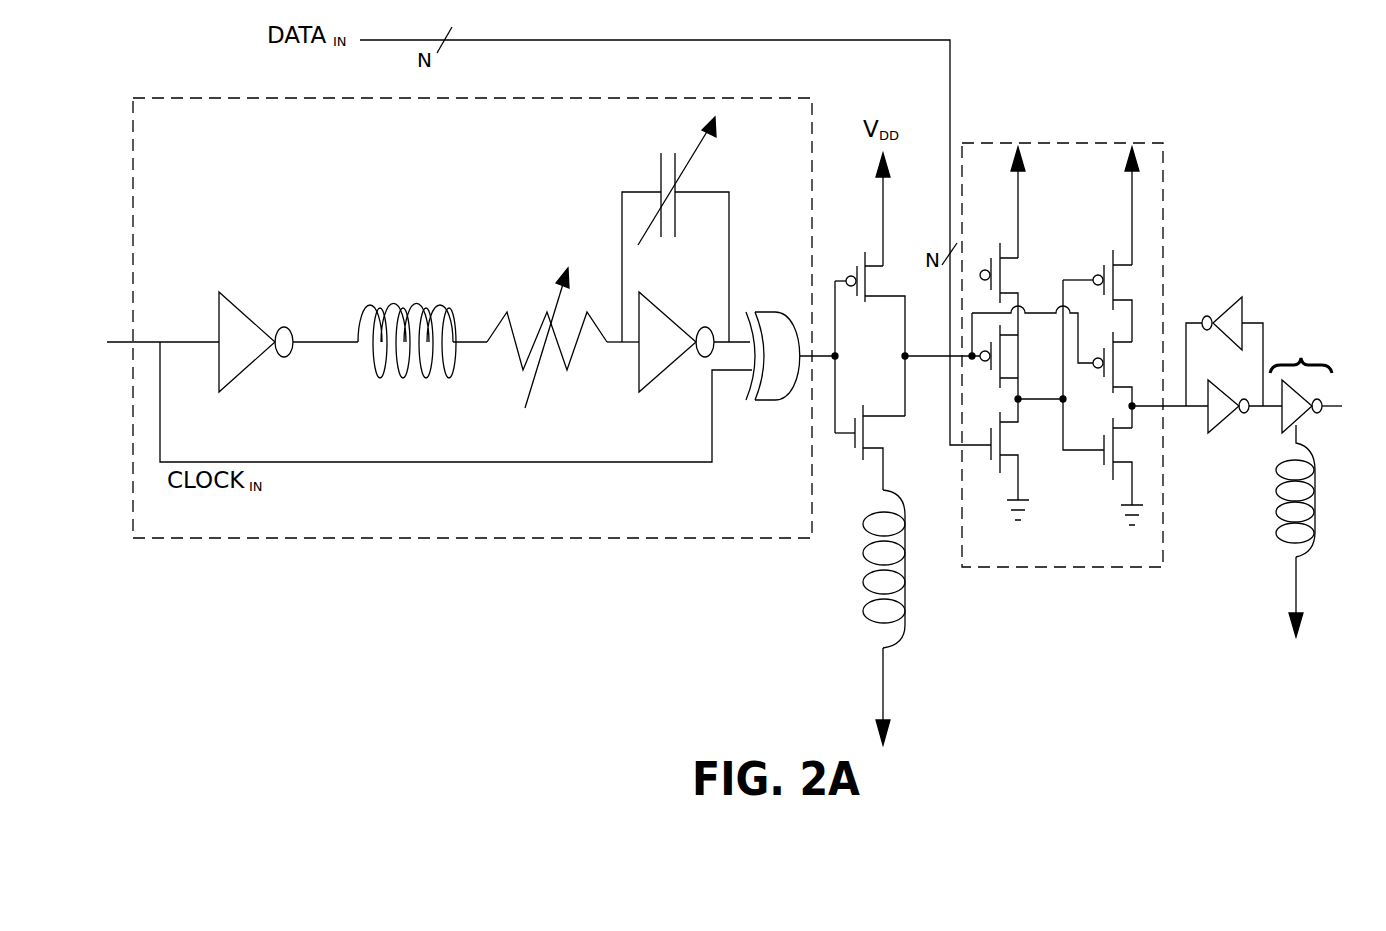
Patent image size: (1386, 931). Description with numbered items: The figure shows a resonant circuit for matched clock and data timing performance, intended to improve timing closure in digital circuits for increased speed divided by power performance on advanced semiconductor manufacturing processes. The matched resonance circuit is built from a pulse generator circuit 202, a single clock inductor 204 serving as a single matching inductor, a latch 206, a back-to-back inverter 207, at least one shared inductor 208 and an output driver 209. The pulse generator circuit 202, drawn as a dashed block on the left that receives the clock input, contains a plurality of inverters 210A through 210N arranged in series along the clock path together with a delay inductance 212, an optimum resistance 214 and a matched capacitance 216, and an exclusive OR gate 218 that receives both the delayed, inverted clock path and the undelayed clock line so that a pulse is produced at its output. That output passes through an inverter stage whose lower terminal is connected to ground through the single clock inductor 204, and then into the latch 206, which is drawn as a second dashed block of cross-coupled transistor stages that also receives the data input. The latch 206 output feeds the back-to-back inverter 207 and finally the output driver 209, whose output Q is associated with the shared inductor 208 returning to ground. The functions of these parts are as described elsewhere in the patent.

The pulse generator circuit 202 is at (465, 538).
The single clock inductor 204 is at (863, 623).
The latch 206 is at (1163, 177).
The back-to-back inverter 207 is at (1257, 323).
The shared inductor 208 is at (1273, 538).
The output driver 209 is at (1301, 358).
The inverter 210A is at (257, 363).
The inverter 210N is at (665, 362).
The delay inductance 212 is at (437, 368).
The optimum resistance 214 is at (578, 352).
The matched capacitance 216 is at (660, 177).
The exclusive OR gate 218 is at (775, 312).